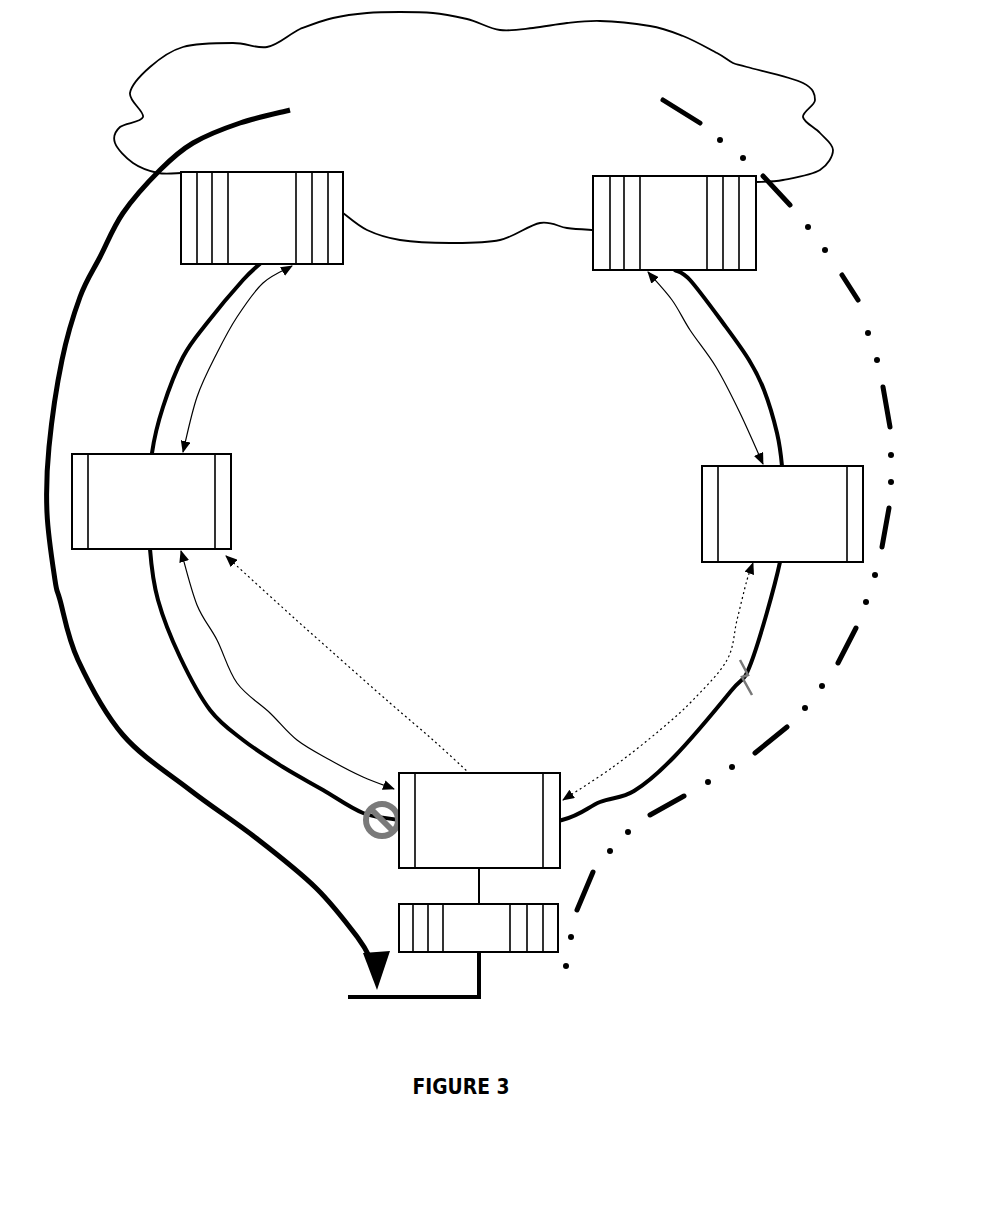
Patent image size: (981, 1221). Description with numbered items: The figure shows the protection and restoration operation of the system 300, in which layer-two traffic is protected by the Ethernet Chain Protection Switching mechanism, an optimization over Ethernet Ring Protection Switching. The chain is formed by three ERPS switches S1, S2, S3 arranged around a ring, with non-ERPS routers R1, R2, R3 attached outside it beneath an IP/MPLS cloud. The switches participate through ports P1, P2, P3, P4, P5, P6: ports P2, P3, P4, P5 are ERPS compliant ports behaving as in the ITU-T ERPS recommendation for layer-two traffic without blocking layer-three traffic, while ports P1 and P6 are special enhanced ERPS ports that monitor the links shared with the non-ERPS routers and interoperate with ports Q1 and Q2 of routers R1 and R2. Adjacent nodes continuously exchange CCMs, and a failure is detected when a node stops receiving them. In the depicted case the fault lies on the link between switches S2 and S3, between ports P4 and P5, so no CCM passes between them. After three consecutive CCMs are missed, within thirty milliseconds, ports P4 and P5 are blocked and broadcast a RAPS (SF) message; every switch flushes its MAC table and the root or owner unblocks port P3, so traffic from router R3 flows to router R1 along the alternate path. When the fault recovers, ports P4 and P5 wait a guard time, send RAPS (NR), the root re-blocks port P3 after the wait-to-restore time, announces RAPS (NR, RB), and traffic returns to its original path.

The system 300 is at (470, 538).
The router R1 is at (262, 218).
The router R2 is at (674, 223).
The router R3 is at (478, 928).
The switch S1 is at (151, 501).
The switch S2 is at (479, 820).
The switch S3 is at (782, 514).
The port P1 is at (138, 440).
The port P2 is at (136, 567).
The port P3 is at (380, 843).
The port P4 is at (577, 832).
The port P5 is at (794, 579).
The port P6 is at (797, 450).
The port Q1 is at (234, 281).
The port Q2 is at (706, 287).